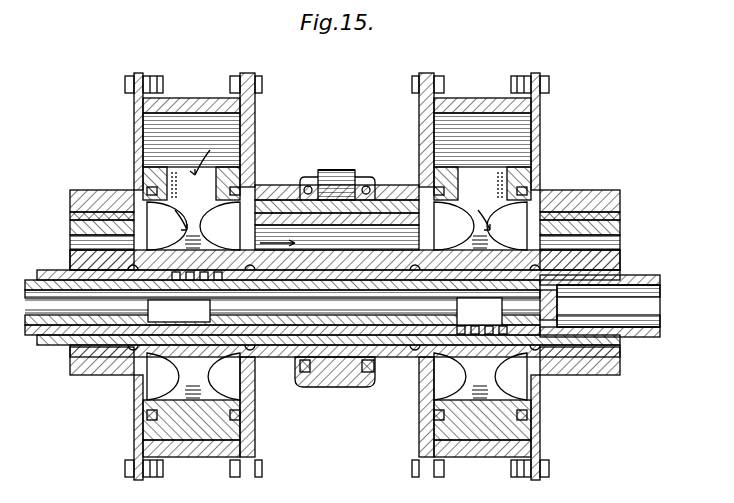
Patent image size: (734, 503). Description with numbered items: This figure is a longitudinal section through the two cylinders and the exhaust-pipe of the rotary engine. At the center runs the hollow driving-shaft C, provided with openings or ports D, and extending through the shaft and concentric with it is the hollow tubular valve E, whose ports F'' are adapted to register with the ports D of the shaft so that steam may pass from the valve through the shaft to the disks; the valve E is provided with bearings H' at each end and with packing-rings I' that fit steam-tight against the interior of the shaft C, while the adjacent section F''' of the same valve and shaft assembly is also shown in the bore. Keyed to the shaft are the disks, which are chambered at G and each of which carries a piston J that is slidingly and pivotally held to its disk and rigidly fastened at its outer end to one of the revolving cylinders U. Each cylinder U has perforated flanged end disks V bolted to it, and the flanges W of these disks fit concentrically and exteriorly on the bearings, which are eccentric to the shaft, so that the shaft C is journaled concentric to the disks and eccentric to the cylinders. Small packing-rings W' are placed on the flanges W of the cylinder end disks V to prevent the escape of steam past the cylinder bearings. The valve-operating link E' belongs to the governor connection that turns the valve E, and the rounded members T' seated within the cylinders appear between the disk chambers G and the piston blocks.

The perforated flanged end disks V is at (134, 112).
The revolving cylinders U is at (195, 106).
The flanges W is at (352, 269).
The small packing-rings W' is at (337, 175).
The piston J is at (340, 176).
The link E' is at (337, 144).
The chamber of disk G is at (533, 202).
The ball valve member T' is at (306, 331).
The packing-rings I' is at (337, 326).
The bearings H' is at (328, 291).
The hollow driving-shaft C is at (660, 278).
The openings or ports D is at (222, 280).
The hollow tubular valve E is at (578, 304).
The ports in the valve F'' is at (427, 302).
The rod section F''' is at (179, 311).